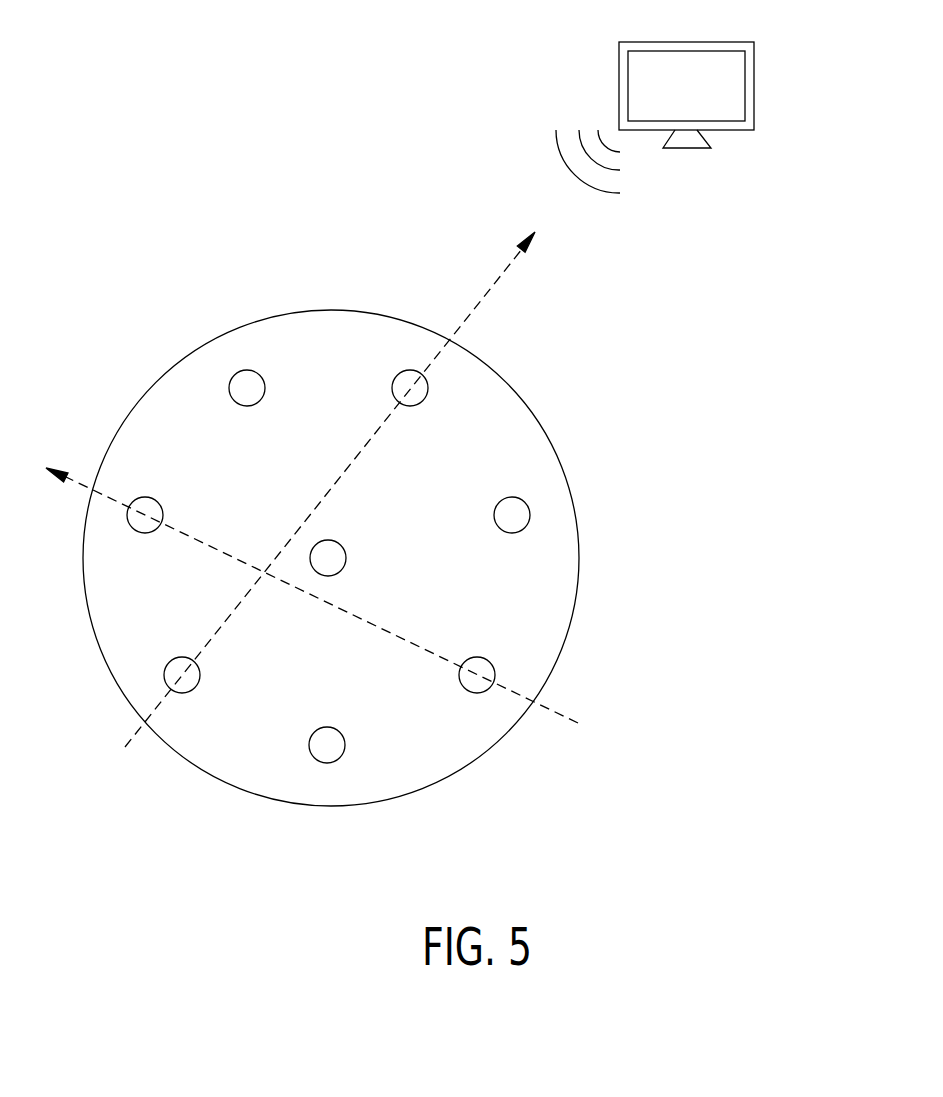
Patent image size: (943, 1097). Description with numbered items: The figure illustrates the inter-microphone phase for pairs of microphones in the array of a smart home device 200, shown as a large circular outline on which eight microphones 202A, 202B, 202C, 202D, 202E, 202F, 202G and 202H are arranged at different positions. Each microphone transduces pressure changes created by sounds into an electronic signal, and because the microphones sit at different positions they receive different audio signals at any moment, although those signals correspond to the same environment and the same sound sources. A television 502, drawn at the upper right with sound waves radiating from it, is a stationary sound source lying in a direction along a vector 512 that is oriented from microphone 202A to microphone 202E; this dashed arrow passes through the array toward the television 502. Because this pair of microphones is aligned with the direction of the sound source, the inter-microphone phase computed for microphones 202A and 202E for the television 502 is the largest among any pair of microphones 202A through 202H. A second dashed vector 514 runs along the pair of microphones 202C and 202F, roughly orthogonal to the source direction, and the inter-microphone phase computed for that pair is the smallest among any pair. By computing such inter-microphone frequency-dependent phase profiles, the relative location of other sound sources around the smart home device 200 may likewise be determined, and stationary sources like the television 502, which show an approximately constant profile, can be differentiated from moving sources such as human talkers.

The television 502 is at (756, 90).
The smart home device 200 is at (550, 440).
The vector 512 is at (505, 270).
The vector 514 is at (550, 713).
The microphone 202A is at (428, 388).
The microphone 202B is at (513, 533).
The microphone 202C is at (476, 657).
The microphone 202D is at (345, 745).
The microphone 202E is at (200, 678).
The microphone 202F is at (163, 513).
The microphone 202G is at (265, 385).
The microphone 202H is at (346, 555).